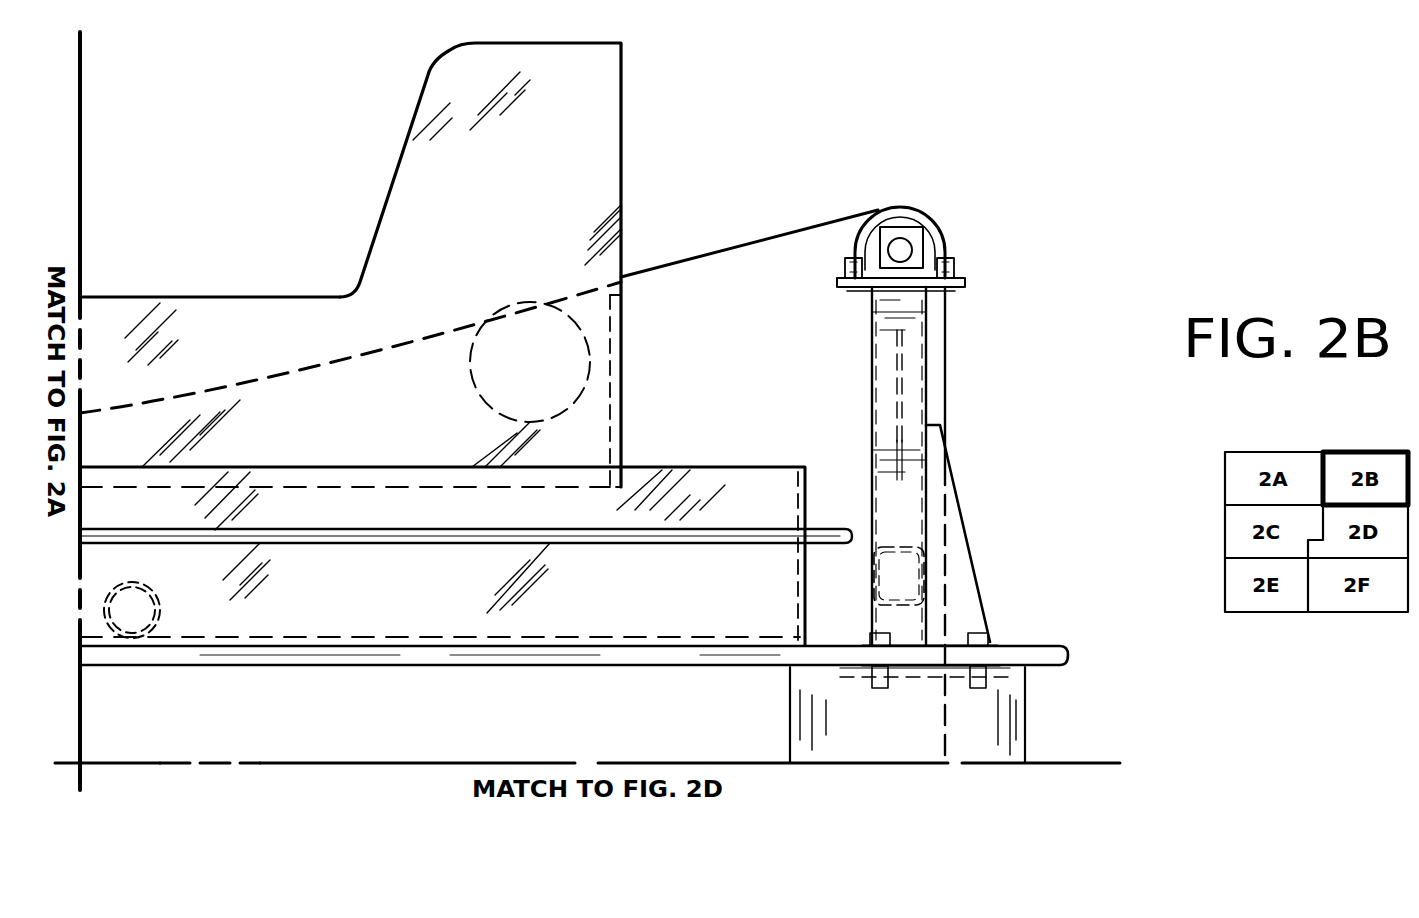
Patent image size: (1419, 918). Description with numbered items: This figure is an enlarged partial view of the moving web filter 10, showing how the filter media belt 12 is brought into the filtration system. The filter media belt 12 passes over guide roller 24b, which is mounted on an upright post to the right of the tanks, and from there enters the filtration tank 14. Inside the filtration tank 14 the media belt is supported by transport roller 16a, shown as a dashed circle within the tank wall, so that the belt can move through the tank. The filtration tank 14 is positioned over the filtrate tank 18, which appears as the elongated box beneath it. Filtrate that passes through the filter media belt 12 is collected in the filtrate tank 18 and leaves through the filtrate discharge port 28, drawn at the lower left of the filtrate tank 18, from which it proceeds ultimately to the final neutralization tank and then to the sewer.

The moving web filter 10 is at (713, 146).
The filter media belt 12 is at (345, 355).
The filtration tank 14 is at (220, 333).
The transport roller 16a is at (562, 410).
The filtrate tank 18 is at (672, 602).
The guide roller 24b is at (940, 220).
The filtrate discharge port 28 is at (182, 640).